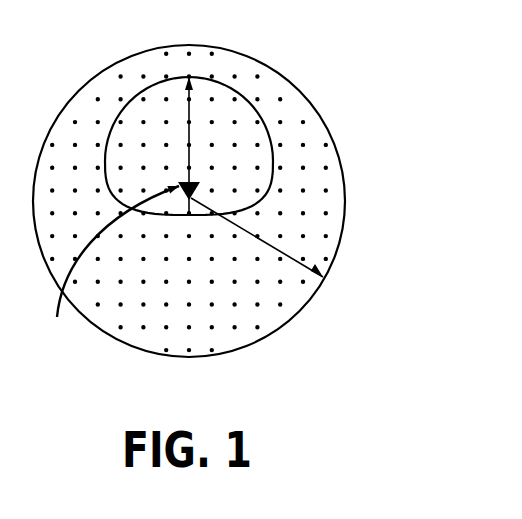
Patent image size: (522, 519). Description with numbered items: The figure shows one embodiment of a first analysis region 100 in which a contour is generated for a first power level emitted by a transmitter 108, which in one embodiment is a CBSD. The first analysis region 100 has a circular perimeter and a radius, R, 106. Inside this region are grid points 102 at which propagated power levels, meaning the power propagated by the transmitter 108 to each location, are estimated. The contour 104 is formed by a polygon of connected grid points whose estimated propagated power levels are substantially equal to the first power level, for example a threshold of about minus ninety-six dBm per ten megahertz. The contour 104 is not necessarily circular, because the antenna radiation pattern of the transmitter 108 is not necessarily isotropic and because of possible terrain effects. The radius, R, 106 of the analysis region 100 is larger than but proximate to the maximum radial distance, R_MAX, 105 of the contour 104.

The first analysis region 100 is at (290, 320).
The grid points 102 is at (75, 122).
The contour 104 is at (272, 132).
The maximum radial distance R_MAX 105 is at (188, 133).
The radius R 106 is at (290, 257).
The transmitter 108 is at (107, 264).